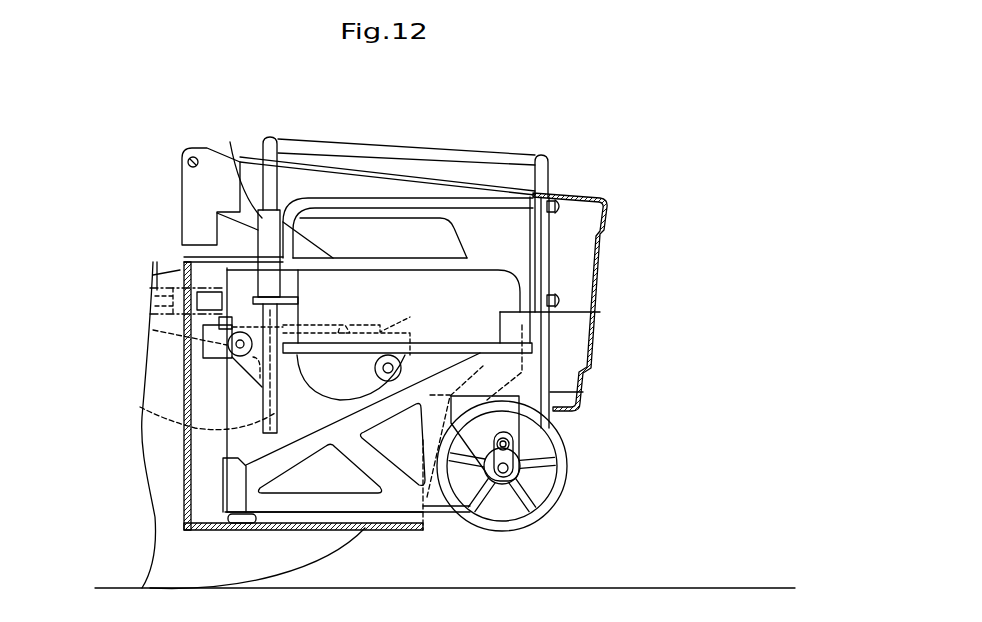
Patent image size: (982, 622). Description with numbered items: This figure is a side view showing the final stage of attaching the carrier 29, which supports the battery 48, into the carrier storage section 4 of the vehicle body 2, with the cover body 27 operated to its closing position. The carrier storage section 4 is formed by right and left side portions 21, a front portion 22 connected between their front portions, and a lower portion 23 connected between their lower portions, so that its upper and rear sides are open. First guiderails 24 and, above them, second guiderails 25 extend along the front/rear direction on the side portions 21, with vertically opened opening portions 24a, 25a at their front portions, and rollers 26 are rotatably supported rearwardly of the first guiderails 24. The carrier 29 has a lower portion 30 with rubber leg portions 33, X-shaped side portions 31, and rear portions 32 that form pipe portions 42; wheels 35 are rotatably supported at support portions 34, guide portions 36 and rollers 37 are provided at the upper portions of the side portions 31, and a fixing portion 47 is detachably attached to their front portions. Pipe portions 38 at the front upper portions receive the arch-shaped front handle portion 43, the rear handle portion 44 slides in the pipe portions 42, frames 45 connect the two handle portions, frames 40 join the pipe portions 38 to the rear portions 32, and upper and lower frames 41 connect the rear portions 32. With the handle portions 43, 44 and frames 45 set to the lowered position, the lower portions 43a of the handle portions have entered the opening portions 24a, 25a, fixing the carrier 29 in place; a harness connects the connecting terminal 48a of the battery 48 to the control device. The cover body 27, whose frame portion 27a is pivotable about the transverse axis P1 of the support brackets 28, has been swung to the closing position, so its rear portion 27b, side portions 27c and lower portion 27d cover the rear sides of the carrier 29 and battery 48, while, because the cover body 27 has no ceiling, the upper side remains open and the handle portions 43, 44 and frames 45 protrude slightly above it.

The vehicle body 2 is at (160, 519).
The carrier storage section 4 is at (166, 256).
The side portion 21 is at (200, 440).
The front portion 22 is at (183, 469).
The lower portion 23 is at (362, 533).
The first guiderail 24 is at (353, 357).
The opening portion 24a is at (205, 410).
The second guiderail 25 is at (332, 322).
The opening portion 25a is at (303, 276).
The roller 26 is at (388, 381).
The cover body 27 is at (612, 200).
The frame portion 27a is at (434, 172).
The rear portion 27b is at (604, 285).
The side portion 27c is at (584, 348).
The lower portion 27d is at (578, 408).
The support bracket 28 is at (185, 197).
The carrier 29 is at (552, 165).
The lower portion 30 is at (226, 513).
The side portion 31 is at (432, 513).
The rear portion 32 is at (532, 246).
The leg portion 33 is at (241, 523).
The support portion 34 is at (490, 398).
The wheel 35 is at (562, 484).
The guide portion 36 is at (454, 344).
The roller 37 is at (230, 346).
The pipe portion 38 is at (238, 170).
The frame 40 is at (479, 164).
The frame 41 is at (557, 210).
The pipe portion 42 is at (550, 320).
The front handle portion 43 is at (272, 141).
The lower portion 43a is at (276, 428).
The rear handle portion 44 is at (542, 155).
The frame 45 is at (384, 148).
The fixing portion 47 is at (220, 324).
The battery 48 is at (404, 286).
The connecting terminal 48a is at (178, 303).
The transverse axis P1 is at (187, 162).